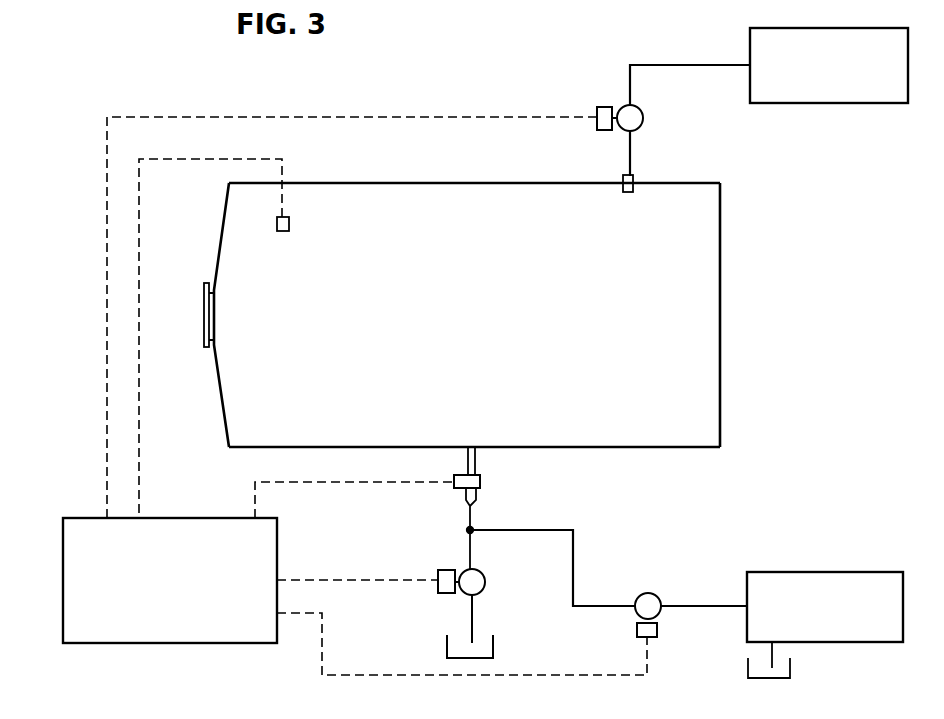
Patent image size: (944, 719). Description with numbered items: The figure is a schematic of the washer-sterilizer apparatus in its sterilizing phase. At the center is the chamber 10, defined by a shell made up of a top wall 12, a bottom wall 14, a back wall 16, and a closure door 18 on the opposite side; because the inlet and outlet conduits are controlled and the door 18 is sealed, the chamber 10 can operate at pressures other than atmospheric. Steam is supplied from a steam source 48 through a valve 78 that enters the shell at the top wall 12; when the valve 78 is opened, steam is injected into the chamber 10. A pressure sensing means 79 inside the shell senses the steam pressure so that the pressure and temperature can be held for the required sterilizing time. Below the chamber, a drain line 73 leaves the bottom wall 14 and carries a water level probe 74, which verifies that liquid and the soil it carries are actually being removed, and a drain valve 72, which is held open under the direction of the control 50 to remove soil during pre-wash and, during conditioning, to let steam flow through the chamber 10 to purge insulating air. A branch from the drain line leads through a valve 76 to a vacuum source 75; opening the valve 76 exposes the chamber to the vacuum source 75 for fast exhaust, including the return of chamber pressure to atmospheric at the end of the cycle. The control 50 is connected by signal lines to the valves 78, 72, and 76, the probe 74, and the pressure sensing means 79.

The chamber 10 is at (470, 318).
The top wall 12 is at (428, 183).
The bottom wall 14 is at (575, 448).
The back wall 16 is at (720, 337).
The closure door 18 is at (220, 397).
The steam source 48 is at (855, 28).
The control 50 is at (63, 625).
The drain valve 72 is at (485, 577).
The drain line 73 is at (466, 461).
The water level probe 74 is at (460, 490).
The vacuum source 75 is at (780, 572).
The valve 76 is at (662, 581).
The valve 78 is at (643, 128).
The pressure sensing means 79 is at (289, 231).